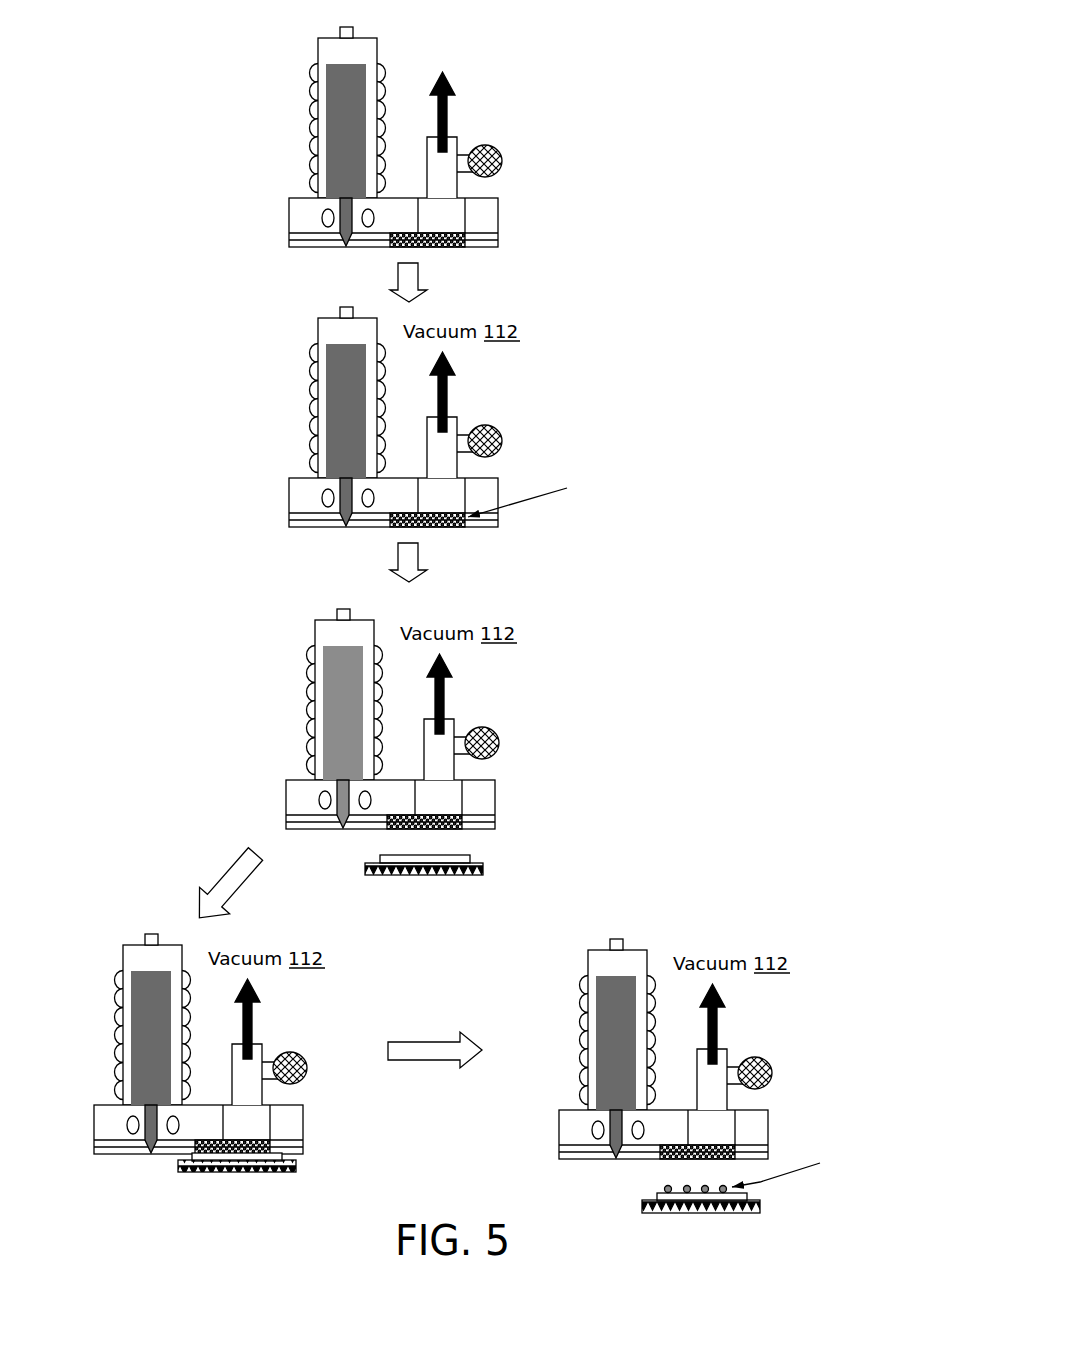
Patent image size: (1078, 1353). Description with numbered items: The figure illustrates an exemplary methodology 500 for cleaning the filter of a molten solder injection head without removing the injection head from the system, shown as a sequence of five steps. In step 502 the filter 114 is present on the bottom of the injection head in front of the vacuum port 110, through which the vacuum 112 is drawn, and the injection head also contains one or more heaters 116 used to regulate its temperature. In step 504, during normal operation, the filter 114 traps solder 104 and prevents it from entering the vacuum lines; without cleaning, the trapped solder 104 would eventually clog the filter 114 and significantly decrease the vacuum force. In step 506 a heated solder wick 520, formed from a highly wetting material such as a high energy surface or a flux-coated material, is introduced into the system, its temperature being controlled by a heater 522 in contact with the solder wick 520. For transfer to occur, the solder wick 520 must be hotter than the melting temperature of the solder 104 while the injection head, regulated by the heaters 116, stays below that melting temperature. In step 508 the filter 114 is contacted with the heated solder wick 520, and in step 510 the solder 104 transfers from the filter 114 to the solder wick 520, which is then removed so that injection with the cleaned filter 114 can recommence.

The methodology 500 is at (103, 30).
The step 502 is at (382, 130).
The step 504 is at (466, 417).
The step 506 is at (380, 730).
The step 508 is at (174, 1020).
The step 510 is at (754, 1058).
The solder 104 is at (340, 125).
The vacuum port 110 is at (447, 230).
The vacuum 112 is at (520, 61).
The filter 114 is at (468, 238).
The heaters 116 is at (315, 63).
The solder wick 520 is at (472, 857).
The heater 522 is at (482, 868).